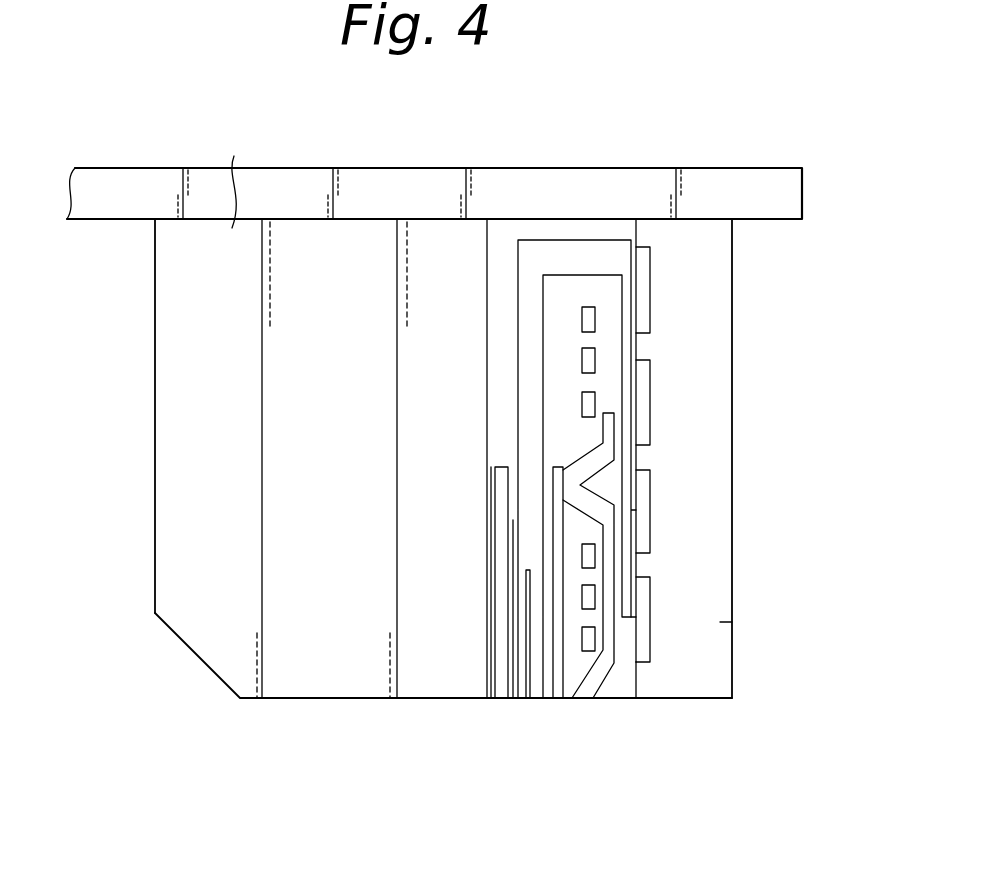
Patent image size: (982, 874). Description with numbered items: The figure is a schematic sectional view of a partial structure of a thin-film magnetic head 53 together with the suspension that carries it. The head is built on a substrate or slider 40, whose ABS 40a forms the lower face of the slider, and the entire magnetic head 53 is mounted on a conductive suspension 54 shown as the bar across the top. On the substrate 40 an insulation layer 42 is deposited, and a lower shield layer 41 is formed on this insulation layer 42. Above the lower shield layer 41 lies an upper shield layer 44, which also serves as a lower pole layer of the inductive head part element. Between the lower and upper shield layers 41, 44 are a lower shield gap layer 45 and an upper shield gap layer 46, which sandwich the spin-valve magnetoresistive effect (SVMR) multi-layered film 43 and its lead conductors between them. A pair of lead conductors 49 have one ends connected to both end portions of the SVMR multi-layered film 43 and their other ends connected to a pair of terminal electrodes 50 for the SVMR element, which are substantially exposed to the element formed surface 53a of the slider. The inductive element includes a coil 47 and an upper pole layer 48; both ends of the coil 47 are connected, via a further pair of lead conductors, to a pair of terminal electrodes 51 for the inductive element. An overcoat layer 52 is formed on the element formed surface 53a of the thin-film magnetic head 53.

The substrate or slider 40 is at (232, 227).
The ABS of the slider 40a is at (310, 700).
The lower shield layer 41 is at (498, 699).
The insulation layer 42 is at (490, 663).
The spin-valve magnetoresistive effect (SVMR) multi-layered film 43 is at (527, 700).
The upper shield layer or lower pole layer 44 is at (583, 683).
The lower shield gap layer 45 is at (517, 700).
The upper shield gap layer 46 is at (538, 650).
The coil 47 is at (582, 405).
The upper pole layer 48 is at (600, 687).
The lead conductors 49 is at (594, 240).
The terminal electrodes for SVMR element 50 is at (643, 530).
The terminal electrodes for inductive element 51 is at (643, 310).
The overcoat layer 52 is at (725, 622).
The thin-film magnetic head 53 is at (784, 381).
The element formed surface 53a is at (637, 677).
The conductive suspension 54 is at (398, 183).